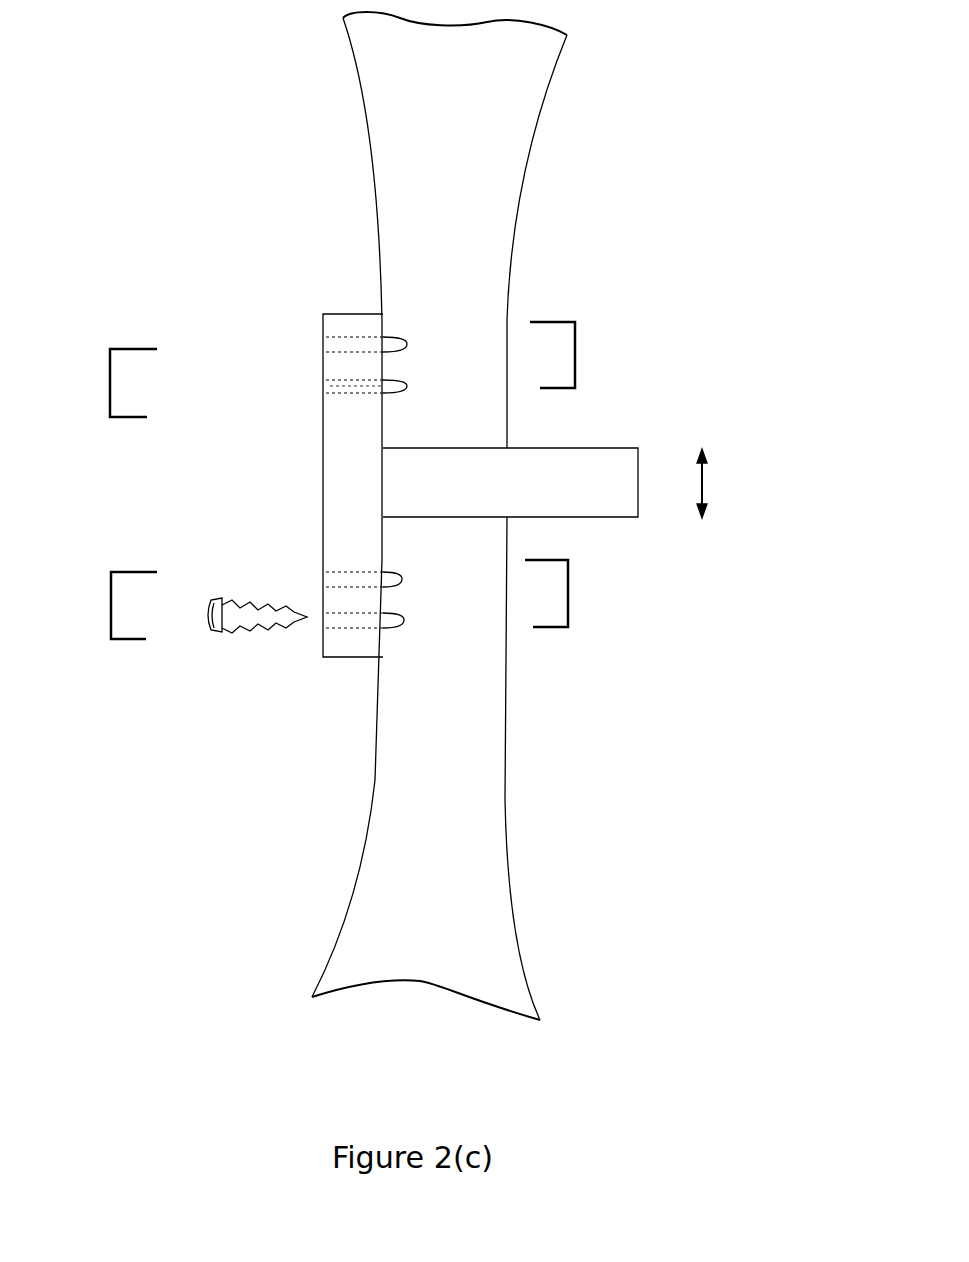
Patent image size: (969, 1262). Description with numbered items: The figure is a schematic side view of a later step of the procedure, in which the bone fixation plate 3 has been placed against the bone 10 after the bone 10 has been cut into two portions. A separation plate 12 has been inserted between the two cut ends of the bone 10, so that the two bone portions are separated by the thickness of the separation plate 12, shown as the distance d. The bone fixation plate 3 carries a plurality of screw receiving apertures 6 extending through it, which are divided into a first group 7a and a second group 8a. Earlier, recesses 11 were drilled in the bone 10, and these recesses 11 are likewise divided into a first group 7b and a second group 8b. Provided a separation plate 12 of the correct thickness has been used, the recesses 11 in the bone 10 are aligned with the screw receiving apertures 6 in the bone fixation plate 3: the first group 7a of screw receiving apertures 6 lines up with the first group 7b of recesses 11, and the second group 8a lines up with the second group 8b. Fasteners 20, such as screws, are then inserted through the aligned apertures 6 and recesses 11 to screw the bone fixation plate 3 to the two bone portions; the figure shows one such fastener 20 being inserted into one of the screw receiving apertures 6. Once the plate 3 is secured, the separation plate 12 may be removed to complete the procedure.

The bone 10 is at (518, 152).
The recesses 11 is at (400, 343).
The bone fixation device 3 is at (340, 310).
The separation plate 12 is at (583, 487).
The screw receiving apertures 6 is at (345, 386).
The fasteners 20 is at (247, 622).
The first group of screw receiving apertures 7a is at (107, 383).
The first group of recesses 7b is at (578, 355).
The second group of screw receiving apertures 8a is at (107, 605).
The second group of recesses 8b is at (570, 593).
The distance d is at (718, 483).